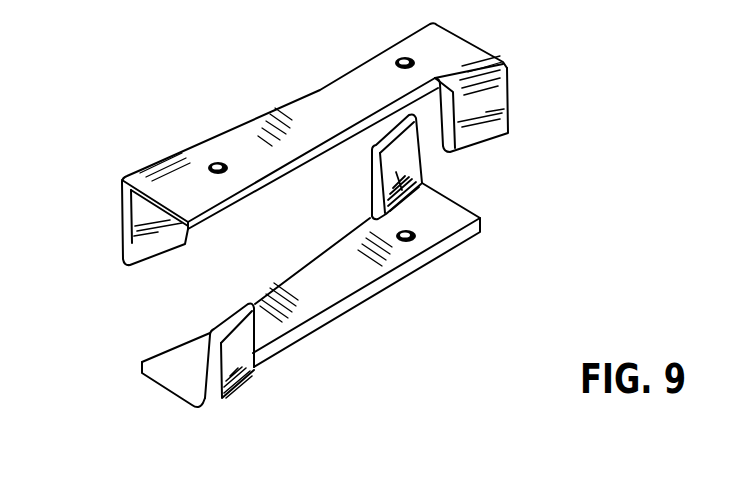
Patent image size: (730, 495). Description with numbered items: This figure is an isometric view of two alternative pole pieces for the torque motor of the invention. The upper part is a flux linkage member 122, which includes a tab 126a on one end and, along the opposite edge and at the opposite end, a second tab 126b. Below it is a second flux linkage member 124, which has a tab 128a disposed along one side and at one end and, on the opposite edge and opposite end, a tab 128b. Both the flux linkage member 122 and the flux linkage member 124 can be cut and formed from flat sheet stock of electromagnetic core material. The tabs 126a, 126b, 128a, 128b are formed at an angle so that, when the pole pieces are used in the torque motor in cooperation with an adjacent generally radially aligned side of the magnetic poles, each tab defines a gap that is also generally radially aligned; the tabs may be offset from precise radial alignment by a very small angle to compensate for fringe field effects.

The flux linkage member 122 is at (243, 153).
The flux linkage member 124 is at (313, 297).
The tab 126a is at (507, 108).
The second tab 126b is at (131, 250).
The tab 128a is at (238, 368).
The tab 128b is at (372, 212).